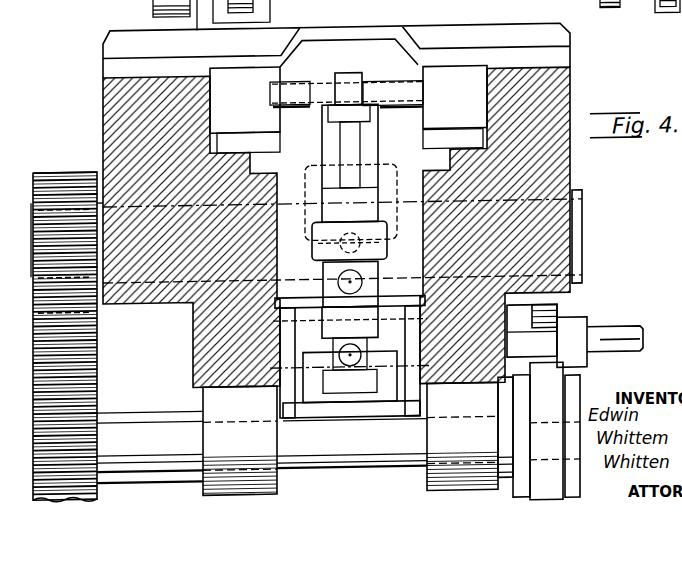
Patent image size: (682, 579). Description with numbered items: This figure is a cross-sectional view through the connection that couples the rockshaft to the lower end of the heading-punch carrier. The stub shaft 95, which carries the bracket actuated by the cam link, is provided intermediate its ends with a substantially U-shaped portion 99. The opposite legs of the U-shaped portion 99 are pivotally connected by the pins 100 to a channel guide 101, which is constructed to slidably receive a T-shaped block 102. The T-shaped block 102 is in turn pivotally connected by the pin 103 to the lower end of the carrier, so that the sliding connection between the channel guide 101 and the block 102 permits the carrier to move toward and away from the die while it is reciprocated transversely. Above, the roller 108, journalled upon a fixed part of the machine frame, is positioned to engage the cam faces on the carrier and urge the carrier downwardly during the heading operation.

The stub shaft 95 is at (193, 359).
The U-shaped portion 99 is at (582, 268).
The pins 100 is at (268, 395).
The channel guide 101 is at (392, 393).
The T-shaped block 102 is at (347, 380).
The pin 103 is at (350, 338).
The roller 108 is at (348, 83).